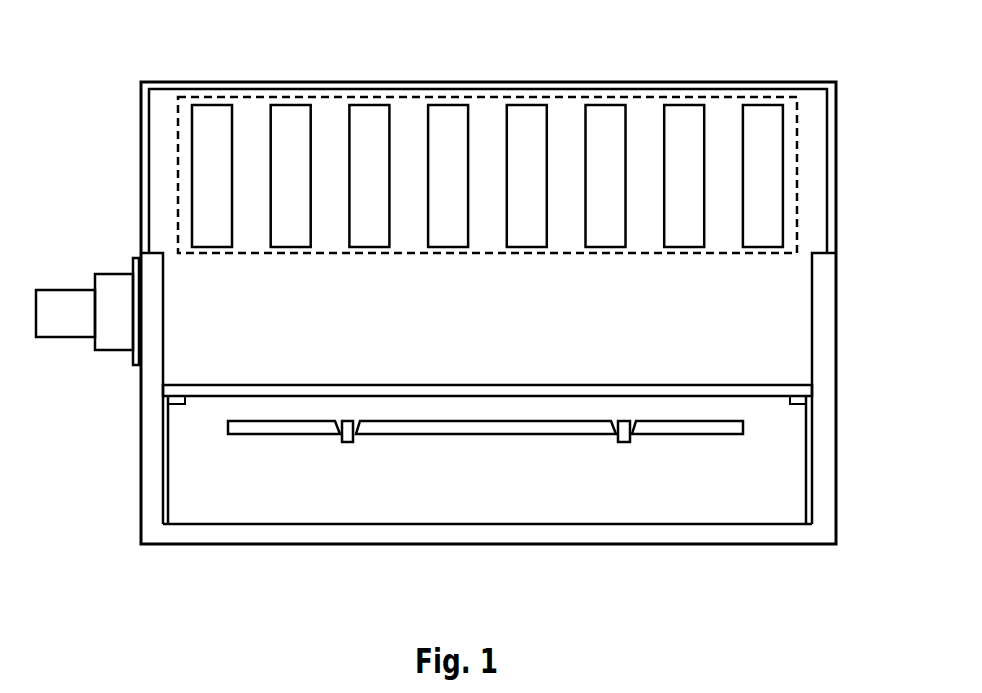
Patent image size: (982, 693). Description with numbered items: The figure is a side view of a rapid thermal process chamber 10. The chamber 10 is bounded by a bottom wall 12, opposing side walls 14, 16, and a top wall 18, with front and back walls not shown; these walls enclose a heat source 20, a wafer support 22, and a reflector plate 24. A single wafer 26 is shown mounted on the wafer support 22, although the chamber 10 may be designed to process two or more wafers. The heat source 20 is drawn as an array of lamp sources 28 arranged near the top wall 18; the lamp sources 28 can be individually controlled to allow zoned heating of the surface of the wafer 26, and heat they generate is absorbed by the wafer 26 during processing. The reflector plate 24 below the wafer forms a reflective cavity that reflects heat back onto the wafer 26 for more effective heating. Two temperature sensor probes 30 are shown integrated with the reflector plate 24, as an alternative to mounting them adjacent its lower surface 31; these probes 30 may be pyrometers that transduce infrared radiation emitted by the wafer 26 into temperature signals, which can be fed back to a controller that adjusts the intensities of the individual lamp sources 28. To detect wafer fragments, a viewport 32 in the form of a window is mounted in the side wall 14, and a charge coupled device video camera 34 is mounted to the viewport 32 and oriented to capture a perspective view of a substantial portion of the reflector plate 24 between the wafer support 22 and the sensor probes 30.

The rapid thermal process chamber 10 is at (120, 140).
The bottom wall 12 is at (437, 545).
The side wall 14 is at (138, 462).
The side wall 16 is at (838, 422).
The top wall 18 is at (485, 82).
The heat source 20 is at (806, 190).
The wafer support 22 is at (810, 393).
The reflector plate 24 is at (288, 435).
The wafer 26 is at (102, 274).
The lamp sources 28 is at (377, 105).
The temperature sensor probes 30 is at (348, 442).
The lower surface 31 is at (685, 435).
The viewport 32 is at (133, 365).
The video camera 34 is at (75, 337).